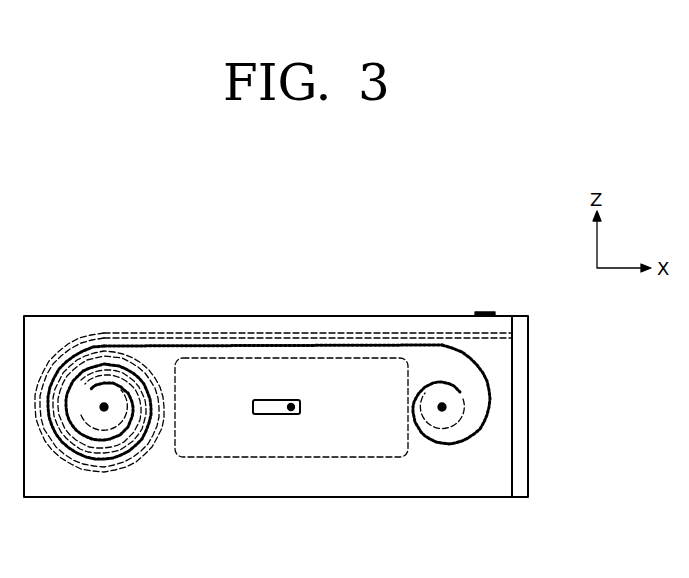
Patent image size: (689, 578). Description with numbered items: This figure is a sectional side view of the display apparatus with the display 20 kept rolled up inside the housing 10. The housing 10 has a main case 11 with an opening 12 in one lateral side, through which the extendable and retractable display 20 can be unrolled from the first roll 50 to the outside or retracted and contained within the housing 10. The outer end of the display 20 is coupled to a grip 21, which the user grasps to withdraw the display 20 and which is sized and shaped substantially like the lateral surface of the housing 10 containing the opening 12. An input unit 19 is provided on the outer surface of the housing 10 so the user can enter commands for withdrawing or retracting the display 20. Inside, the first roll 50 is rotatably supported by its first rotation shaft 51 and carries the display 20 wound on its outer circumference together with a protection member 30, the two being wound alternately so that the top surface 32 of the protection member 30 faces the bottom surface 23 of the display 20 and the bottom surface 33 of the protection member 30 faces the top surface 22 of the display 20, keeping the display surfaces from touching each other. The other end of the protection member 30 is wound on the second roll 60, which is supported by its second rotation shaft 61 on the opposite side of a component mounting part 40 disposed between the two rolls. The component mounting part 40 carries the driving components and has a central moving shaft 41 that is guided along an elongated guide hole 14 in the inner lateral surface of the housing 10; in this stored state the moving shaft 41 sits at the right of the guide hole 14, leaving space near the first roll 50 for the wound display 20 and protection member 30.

The housing 10 is at (312, 391).
The main case 11 is at (416, 316).
The opening 12 is at (299, 375).
The guide hole 14 is at (277, 469).
The input unit 19 is at (489, 313).
The display 20 is at (317, 370).
The grip 21 is at (519, 471).
The top surface of the display 22 is at (216, 337).
The bottom surface of the display 23 is at (185, 333).
The protection member 30 is at (324, 372).
The top surface of the protection member 32 is at (286, 345).
The bottom surface of the protection member 33 is at (256, 345).
The component mounting part 40 is at (291, 448).
The moving shaft 41 is at (290, 411).
The first roll 50 is at (95, 464).
The first rotation shaft 51 is at (106, 412).
The second roll 60 is at (494, 423).
The second rotation shaft 61 is at (448, 410).